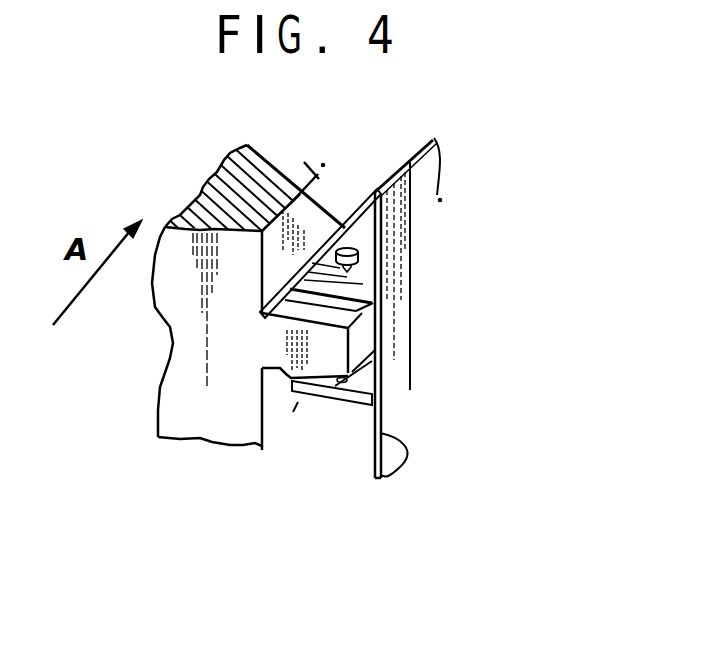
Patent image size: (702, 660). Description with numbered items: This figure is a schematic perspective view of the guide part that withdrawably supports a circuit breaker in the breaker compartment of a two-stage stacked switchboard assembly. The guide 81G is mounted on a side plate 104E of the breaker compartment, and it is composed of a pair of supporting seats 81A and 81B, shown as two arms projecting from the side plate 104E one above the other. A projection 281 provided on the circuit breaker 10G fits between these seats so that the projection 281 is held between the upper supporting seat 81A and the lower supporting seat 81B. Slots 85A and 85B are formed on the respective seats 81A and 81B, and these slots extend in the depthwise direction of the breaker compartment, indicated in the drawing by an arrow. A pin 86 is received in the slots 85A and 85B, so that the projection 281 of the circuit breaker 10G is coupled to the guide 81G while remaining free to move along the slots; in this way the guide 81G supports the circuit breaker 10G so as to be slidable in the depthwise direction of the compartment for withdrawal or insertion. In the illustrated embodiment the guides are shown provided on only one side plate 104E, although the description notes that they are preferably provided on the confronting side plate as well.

The circuit breaker 10G is at (187, 382).
The pin 86 is at (283, 208).
The guide 81G is at (362, 214).
The slot 85A is at (358, 249).
The supporting seat 81A is at (366, 283).
The supporting seat 81B is at (376, 376).
The slot 85B is at (338, 392).
The projection 281 is at (283, 374).
The side plate 104E is at (405, 440).